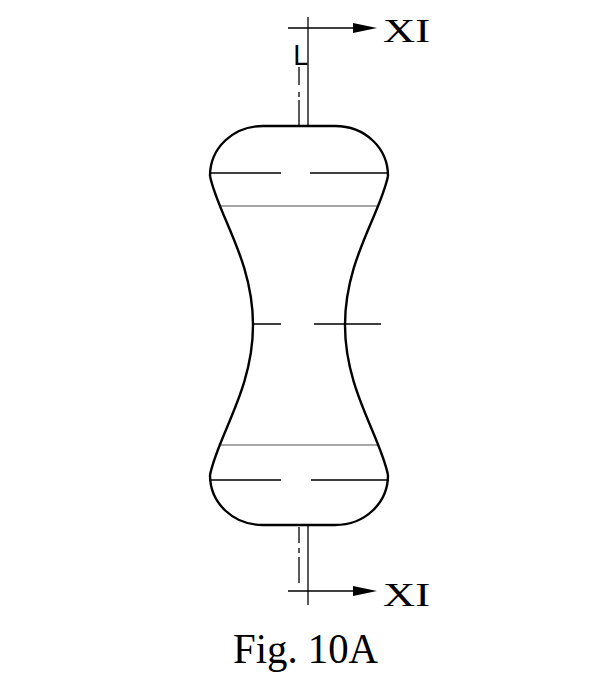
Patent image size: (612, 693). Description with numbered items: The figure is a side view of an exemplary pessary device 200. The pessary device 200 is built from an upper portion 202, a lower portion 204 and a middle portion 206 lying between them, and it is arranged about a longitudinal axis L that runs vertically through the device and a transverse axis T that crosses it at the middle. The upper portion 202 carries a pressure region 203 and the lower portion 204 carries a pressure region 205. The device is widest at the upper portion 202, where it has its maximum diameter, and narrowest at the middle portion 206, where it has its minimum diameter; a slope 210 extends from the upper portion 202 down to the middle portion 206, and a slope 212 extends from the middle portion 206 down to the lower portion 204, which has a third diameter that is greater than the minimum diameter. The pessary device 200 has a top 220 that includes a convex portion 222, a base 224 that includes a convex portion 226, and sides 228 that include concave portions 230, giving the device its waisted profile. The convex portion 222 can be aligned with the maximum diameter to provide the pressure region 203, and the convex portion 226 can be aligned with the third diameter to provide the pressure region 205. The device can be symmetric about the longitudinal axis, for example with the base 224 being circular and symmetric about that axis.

The pessary device 200 is at (138, 74).
The upper portion 202 is at (382, 152).
The pressure region of the upper portion 203 is at (388, 173).
The lower portion 204 is at (383, 495).
The pressure region of the lower portion 205 is at (387, 480).
The middle portion 206 is at (346, 311).
The slope 210 is at (367, 233).
The slope 212 is at (367, 420).
The top 220 is at (212, 157).
The convex portion 222 is at (208, 173).
The base 224 is at (225, 512).
The convex portion 226 is at (210, 480).
The sides 228 is at (240, 258).
The concave portions 230 is at (252, 337).